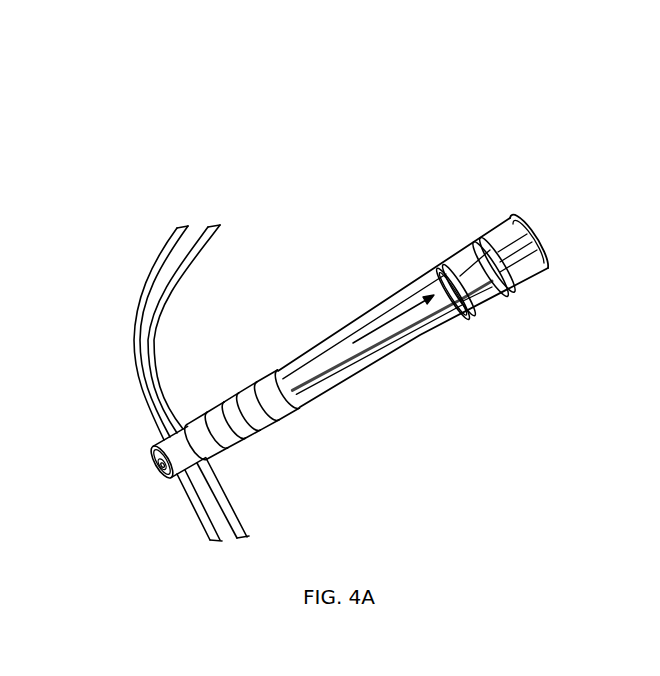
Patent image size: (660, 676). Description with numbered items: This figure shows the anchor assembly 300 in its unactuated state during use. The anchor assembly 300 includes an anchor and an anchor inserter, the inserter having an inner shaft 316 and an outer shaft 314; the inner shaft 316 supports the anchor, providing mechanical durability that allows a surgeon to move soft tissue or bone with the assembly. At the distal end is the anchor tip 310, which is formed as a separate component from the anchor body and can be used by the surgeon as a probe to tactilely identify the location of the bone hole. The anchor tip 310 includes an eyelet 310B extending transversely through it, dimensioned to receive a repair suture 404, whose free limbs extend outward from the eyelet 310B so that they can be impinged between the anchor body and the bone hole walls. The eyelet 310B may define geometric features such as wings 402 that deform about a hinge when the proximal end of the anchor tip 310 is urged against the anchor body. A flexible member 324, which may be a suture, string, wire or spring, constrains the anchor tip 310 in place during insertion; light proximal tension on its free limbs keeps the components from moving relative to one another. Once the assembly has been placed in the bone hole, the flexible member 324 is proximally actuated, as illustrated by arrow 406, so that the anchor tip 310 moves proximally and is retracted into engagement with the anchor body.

The anchor assembly 300 is at (231, 195).
The anchor tip 310 is at (173, 481).
The eyelet 310B is at (163, 443).
The outer shaft 314 is at (404, 290).
The inner shaft 316 is at (322, 357).
The flexible member 324 is at (520, 260).
The wings 402 is at (188, 446).
The repair suture 404 is at (247, 538).
The arrow 406 is at (393, 317).